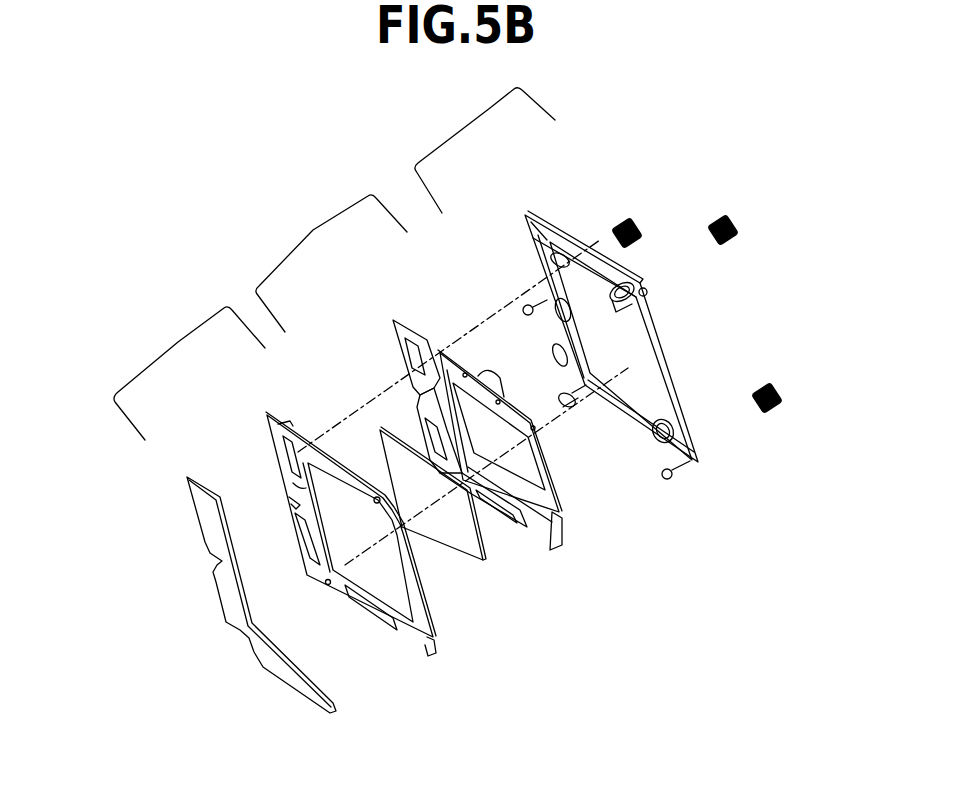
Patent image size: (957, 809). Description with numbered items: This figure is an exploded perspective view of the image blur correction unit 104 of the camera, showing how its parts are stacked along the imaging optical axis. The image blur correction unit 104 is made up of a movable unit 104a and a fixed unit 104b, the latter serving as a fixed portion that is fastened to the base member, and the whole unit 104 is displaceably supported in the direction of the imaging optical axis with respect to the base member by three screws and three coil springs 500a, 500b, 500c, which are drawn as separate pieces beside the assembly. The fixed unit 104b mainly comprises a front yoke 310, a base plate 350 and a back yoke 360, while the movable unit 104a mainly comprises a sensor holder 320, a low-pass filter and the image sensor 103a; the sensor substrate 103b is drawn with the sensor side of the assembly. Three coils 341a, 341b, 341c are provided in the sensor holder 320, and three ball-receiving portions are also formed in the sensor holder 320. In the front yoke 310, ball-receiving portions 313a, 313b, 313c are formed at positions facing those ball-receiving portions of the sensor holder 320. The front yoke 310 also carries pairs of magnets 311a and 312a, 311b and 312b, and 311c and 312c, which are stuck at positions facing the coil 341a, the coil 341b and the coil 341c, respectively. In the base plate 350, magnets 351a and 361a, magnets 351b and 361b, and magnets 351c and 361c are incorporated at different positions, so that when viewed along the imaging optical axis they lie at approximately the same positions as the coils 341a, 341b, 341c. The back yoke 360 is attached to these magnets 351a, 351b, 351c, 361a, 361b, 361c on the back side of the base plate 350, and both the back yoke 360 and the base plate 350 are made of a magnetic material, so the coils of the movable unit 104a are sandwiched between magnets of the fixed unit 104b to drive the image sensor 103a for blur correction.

The image blur correction unit 104 is at (337, 165).
The movable unit 104a is at (313, 231).
The fixed unit 104b is at (490, 108).
The image sensor 103a is at (485, 547).
The sensor substrate 103b is at (448, 530).
The front yoke 310 is at (562, 343).
The magnet 311a is at (523, 245).
The magnet 311b is at (628, 420).
The magnet 311c is at (540, 330).
The magnet 312a is at (545, 258).
The magnet 312b is at (610, 403).
The magnet 312c is at (560, 341).
The ball-receiving portion 313a is at (623, 283).
The ball-receiving portion 313b is at (665, 443).
The ball-receiving portion 313c is at (587, 283).
The sensor holder 320 is at (537, 538).
The coil 341a is at (402, 358).
The coil 341b is at (510, 530).
The coil 341c is at (420, 420).
The base plate 350 is at (317, 532).
The magnet 351a is at (267, 447).
The magnet 351b is at (372, 620).
The magnet 351c is at (292, 522).
The back yoke 360 is at (227, 602).
The magnet 361a is at (290, 421).
The magnet 361b is at (347, 603).
The magnet 361c is at (305, 580).
The coil spring 500a is at (732, 216).
The coil spring 500b is at (635, 218).
The coil spring 500c is at (777, 412).